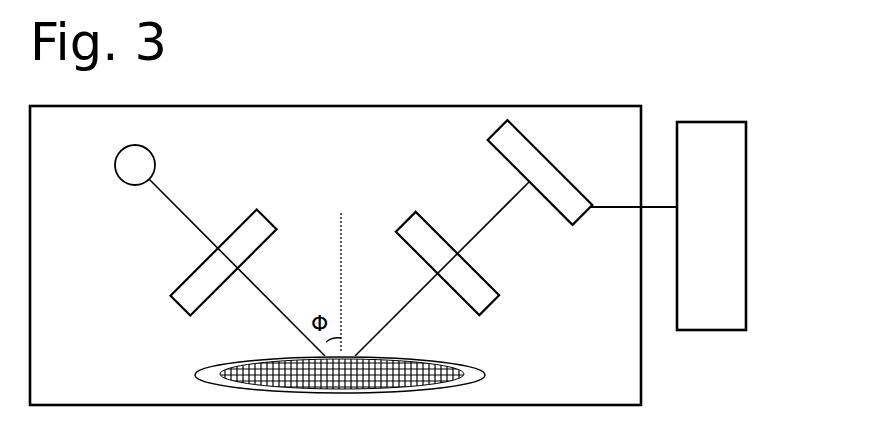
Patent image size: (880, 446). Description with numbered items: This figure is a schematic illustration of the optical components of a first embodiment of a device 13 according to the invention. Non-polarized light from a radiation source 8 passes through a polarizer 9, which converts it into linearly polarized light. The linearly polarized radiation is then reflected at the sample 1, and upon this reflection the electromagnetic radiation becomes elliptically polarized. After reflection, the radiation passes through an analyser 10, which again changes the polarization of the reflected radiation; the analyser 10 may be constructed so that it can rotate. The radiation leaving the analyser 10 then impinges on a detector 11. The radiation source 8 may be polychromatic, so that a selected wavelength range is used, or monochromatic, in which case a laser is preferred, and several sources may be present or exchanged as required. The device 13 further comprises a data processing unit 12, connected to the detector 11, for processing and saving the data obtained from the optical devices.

The sample 1 is at (483, 377).
The radiation source 8 is at (132, 165).
The polarizer 9 is at (183, 282).
The analyser 10 is at (498, 295).
The detector 11 is at (512, 142).
The data processing unit 12 is at (711, 226).
The device 13 is at (650, 352).